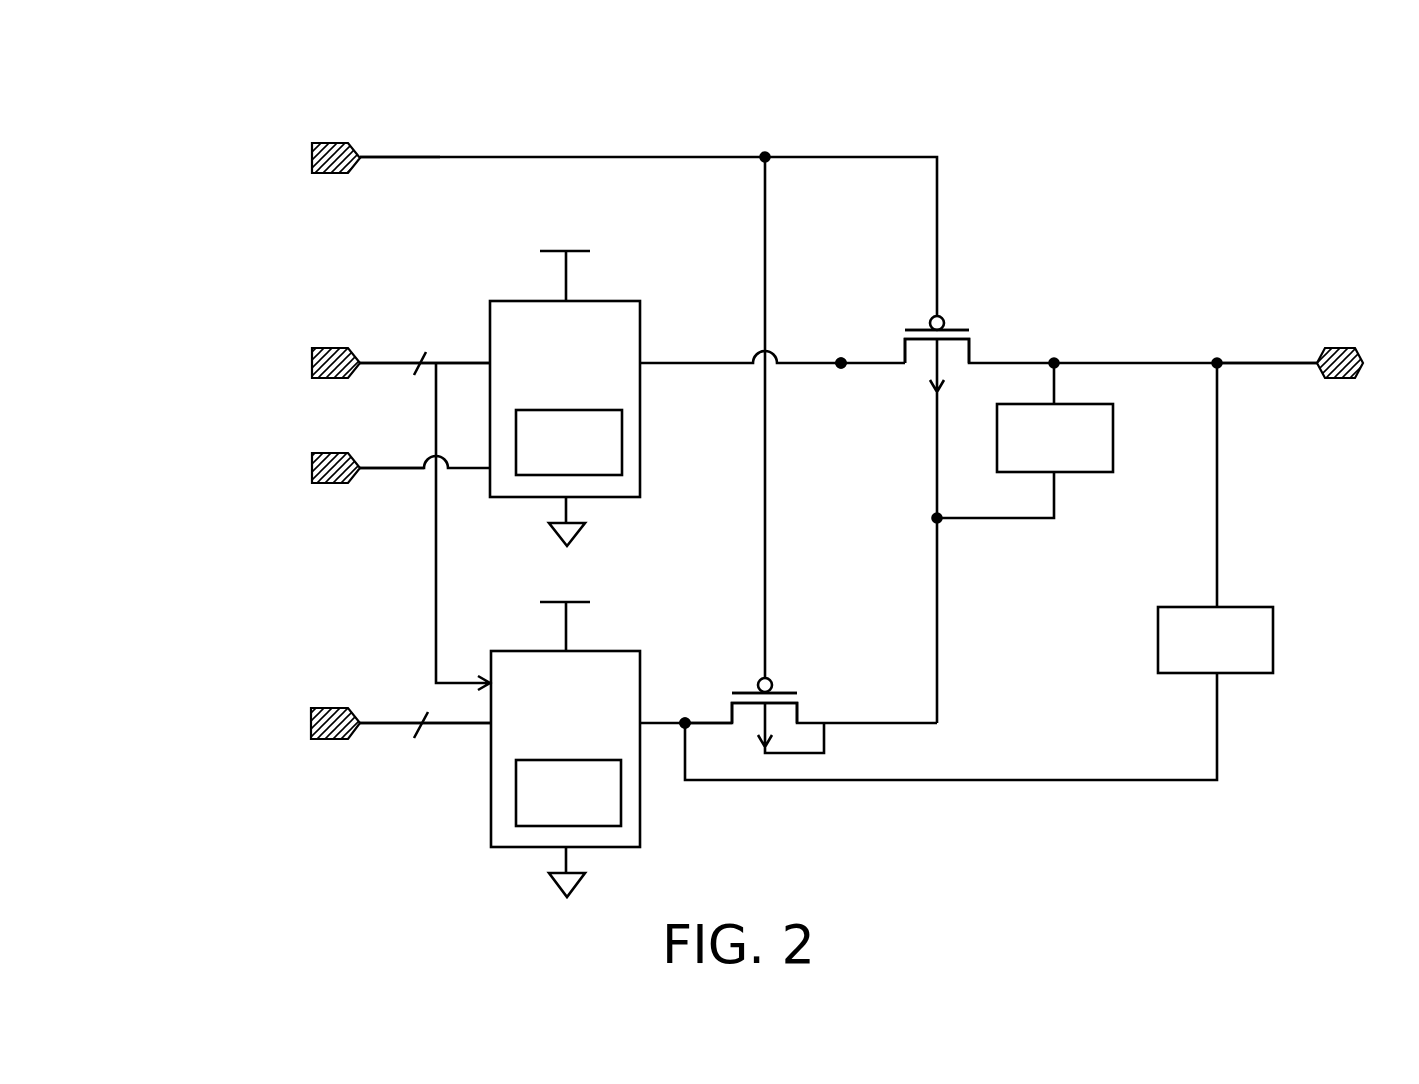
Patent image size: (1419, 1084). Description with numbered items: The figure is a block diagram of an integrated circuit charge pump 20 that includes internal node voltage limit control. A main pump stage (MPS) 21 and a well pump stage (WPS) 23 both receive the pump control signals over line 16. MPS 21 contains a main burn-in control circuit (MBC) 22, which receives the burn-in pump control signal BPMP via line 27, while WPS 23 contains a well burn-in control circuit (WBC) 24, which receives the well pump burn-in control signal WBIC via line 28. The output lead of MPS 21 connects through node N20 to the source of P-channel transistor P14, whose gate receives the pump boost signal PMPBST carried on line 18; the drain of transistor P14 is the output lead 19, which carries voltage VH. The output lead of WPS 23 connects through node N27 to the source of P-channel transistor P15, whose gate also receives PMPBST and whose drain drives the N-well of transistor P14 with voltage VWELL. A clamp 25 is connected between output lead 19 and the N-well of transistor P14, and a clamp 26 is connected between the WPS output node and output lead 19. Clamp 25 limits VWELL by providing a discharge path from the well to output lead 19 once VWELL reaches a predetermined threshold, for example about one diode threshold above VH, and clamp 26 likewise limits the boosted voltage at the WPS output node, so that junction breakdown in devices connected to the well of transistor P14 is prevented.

The line 16 is at (397, 362).
The PMBPBST input 18 is at (407, 160).
The output lead 19 is at (1277, 365).
The charge pump 20 is at (1174, 177).
The main pump stage 21 is at (640, 440).
The main burn-in control circuit 22 is at (622, 452).
The well pump stage 23 is at (491, 828).
The well burn-in control circuit 24 is at (621, 800).
The clamp 25 is at (1106, 455).
The clamp 26 is at (1268, 655).
The line 27 is at (400, 470).
The line 28 is at (396, 722).
The P-channel transistor P14 is at (970, 355).
The P-channel transistor P15 is at (797, 710).
The node N20 is at (841, 367).
The node N27 is at (685, 723).